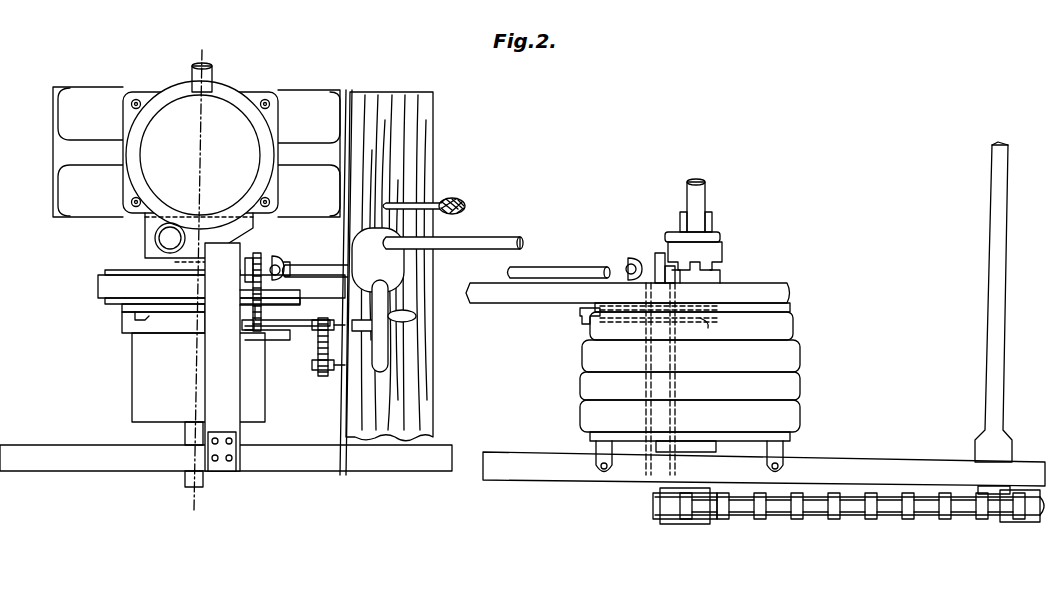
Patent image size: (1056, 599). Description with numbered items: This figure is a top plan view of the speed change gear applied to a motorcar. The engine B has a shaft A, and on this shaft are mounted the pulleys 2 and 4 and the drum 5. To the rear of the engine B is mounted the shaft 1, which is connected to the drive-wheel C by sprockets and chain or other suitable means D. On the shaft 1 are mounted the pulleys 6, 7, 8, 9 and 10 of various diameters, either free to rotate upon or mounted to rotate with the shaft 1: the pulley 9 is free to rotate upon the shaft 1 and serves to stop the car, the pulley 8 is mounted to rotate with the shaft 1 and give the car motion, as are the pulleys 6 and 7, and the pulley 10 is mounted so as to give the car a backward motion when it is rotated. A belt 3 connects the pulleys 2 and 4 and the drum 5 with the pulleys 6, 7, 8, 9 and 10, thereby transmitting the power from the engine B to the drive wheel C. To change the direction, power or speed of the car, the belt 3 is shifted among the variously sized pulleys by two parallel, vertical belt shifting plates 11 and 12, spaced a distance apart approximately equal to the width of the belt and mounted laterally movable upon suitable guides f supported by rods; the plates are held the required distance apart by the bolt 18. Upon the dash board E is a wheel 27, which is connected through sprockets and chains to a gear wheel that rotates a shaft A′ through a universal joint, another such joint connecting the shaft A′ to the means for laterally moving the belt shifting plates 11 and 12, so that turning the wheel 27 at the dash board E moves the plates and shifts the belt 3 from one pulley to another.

The shaft of the engine A is at (197, 280).
The shaft A' is at (447, 255).
The engine B is at (196, 155).
The drive-wheel C is at (270, 262).
The sprockets and chain D is at (712, 522).
The dash board E is at (348, 503).
The guides f is at (658, 262).
The shaft 1 is at (705, 190).
The pulley 2 is at (102, 272).
The belt 3 is at (132, 280).
The pulley 4 is at (128, 324).
The drum 5 is at (130, 378).
The pulley 6 is at (790, 286).
The pulley 7 is at (796, 325).
The pulley 8 is at (802, 357).
The pulley 9 is at (802, 389).
The pulley 10 is at (802, 421).
The belt shifting plate 11 is at (205, 270).
The belt shifting plate 12 is at (130, 309).
The bolt 18 is at (262, 290).
The wheel 27 is at (378, 362).